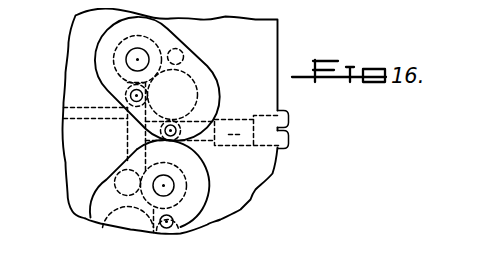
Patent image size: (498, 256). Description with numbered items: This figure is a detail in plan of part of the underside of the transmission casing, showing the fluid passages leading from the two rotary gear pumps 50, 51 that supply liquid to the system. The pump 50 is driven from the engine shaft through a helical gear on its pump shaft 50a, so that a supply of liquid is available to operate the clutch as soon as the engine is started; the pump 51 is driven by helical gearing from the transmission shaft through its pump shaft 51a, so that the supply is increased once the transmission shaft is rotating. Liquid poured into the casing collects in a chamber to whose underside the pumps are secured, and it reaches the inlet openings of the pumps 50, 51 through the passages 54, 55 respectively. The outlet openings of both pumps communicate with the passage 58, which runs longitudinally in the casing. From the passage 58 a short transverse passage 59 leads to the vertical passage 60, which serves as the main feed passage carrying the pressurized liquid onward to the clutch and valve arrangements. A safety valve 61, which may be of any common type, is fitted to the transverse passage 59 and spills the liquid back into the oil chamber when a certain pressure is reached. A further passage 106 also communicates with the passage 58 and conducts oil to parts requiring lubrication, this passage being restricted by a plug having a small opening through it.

The rotary gear pump 50 is at (214, 68).
The pump shaft 50a is at (94, 46).
The rotary gear pump 51 is at (90, 188).
The pump shaft 51a is at (210, 179).
The passage 54 is at (212, 45).
The passage 55 is at (207, 205).
The passage 58 is at (127, 141).
The transverse passage 59 is at (203, 150).
The vertical passage 60 is at (206, 112).
The safety valve 61 is at (288, 117).
The passage 106 is at (90, 117).